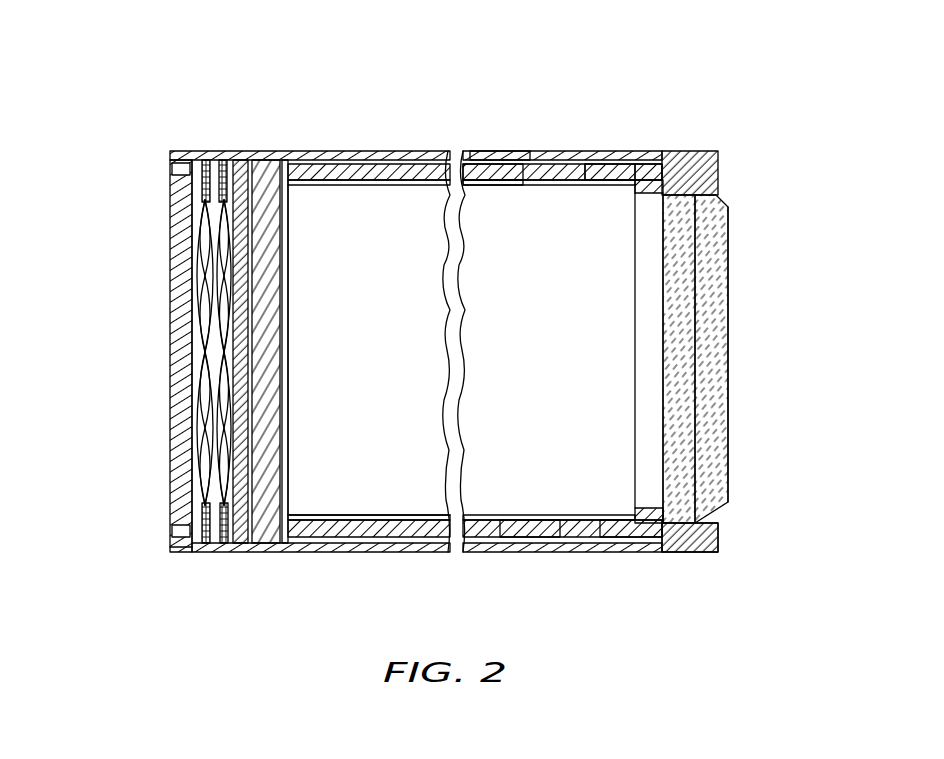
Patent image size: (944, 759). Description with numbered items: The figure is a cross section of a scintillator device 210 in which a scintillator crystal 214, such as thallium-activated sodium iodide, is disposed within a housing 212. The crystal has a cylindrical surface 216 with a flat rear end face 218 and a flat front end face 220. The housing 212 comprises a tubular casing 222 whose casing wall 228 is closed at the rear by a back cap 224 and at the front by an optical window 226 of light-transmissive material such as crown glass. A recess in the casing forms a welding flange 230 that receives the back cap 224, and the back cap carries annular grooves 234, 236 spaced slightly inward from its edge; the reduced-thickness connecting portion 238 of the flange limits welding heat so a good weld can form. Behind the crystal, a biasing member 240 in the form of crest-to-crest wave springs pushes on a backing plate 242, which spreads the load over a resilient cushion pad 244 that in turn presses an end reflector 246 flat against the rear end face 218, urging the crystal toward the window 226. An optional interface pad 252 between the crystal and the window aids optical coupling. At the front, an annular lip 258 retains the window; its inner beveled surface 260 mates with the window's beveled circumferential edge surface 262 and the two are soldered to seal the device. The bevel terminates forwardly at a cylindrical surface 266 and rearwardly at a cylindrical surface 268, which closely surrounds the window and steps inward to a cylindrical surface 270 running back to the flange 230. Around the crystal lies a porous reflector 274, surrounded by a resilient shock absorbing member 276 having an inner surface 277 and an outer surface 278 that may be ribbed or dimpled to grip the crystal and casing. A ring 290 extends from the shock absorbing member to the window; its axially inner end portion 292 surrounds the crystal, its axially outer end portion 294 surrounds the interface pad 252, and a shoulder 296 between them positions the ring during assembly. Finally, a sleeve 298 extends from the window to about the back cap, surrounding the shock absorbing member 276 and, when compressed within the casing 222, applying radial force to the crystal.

The scintillator device 210 is at (143, 42).
The housing 212 is at (486, 553).
The scintillator crystal 214 is at (377, 369).
The cylindrical surface 216 is at (356, 515).
The rear end face 218 is at (290, 440).
The front end face 220 is at (633, 350).
The casing 222 is at (352, 155).
The back cap 224 is at (180, 460).
The optical window 226 is at (732, 405).
The casing wall 228 is at (532, 553).
The welding flange 230 is at (178, 553).
The annular groove 234 is at (172, 170).
The annular groove 236 is at (172, 531).
The connecting portion 238 is at (204, 162).
The biasing member 240 is at (202, 367).
The backing plate 242 is at (240, 163).
The cushion pad 244 is at (265, 553).
The end reflector 246 is at (290, 300).
The interface pad 252 is at (652, 446).
The annular lip 258 is at (722, 172).
The inner beveled surface 260 is at (728, 210).
The beveled circumferential edge surface 262 is at (700, 194).
The cylindrical surface 266 is at (724, 511).
The cylindrical surface 268 is at (680, 523).
The cylindrical surface 270 is at (620, 552).
The reflector 274 is at (540, 187).
The shock absorbing member 276 is at (483, 171).
The inner surface 277 is at (488, 185).
The outer surface 278 is at (509, 168).
The ring 290 is at (640, 190).
The axially inner end portion 292 is at (600, 163).
The axially outer end portion 294 is at (657, 164).
The shoulder 296 is at (634, 511).
The sleeve 298 is at (412, 170).